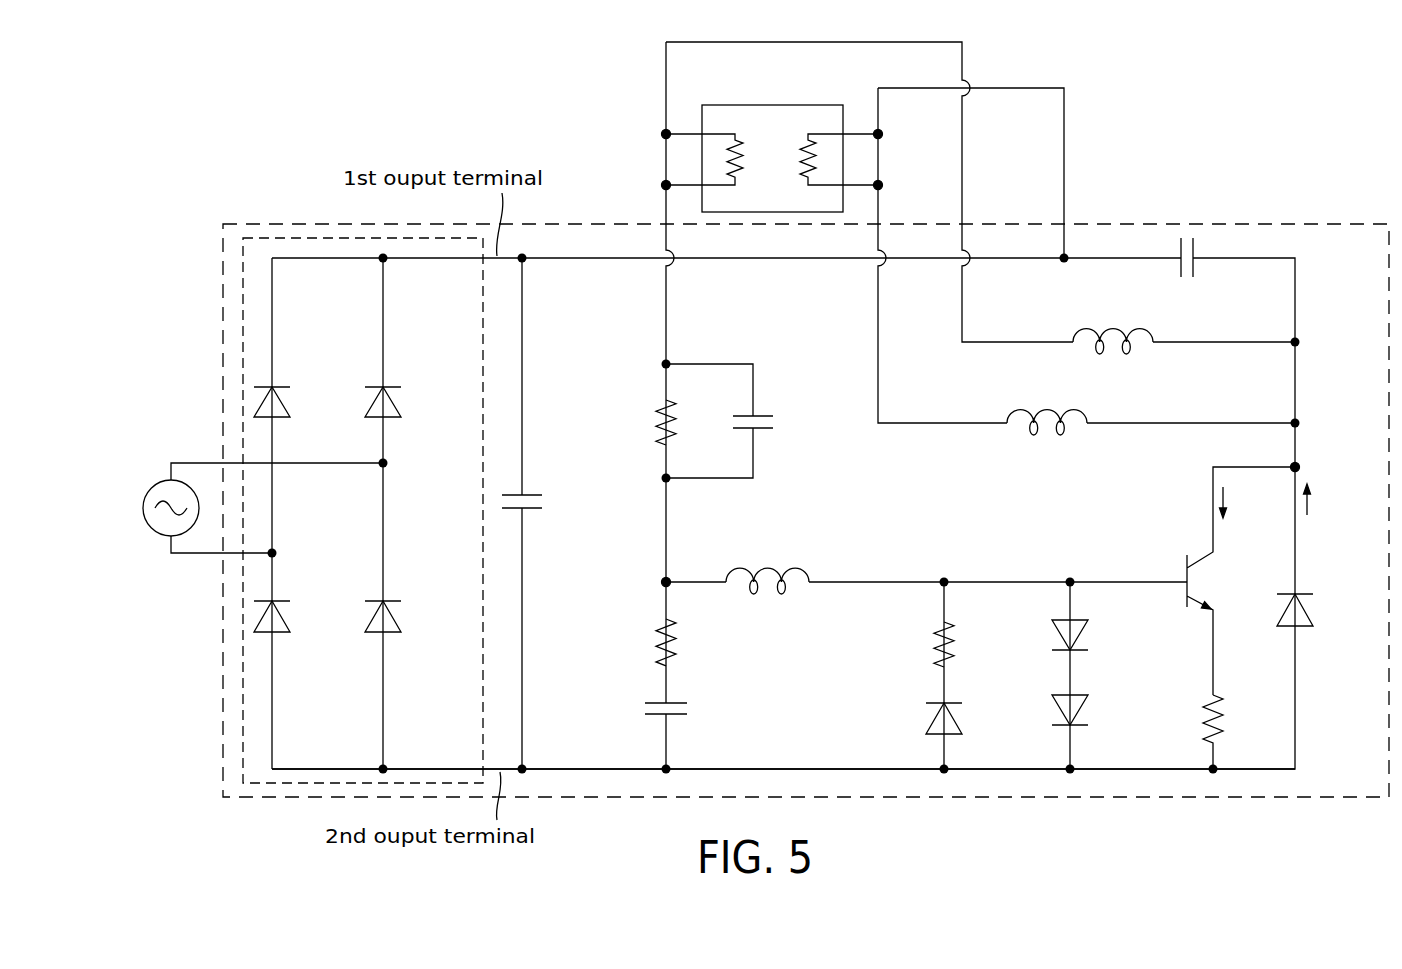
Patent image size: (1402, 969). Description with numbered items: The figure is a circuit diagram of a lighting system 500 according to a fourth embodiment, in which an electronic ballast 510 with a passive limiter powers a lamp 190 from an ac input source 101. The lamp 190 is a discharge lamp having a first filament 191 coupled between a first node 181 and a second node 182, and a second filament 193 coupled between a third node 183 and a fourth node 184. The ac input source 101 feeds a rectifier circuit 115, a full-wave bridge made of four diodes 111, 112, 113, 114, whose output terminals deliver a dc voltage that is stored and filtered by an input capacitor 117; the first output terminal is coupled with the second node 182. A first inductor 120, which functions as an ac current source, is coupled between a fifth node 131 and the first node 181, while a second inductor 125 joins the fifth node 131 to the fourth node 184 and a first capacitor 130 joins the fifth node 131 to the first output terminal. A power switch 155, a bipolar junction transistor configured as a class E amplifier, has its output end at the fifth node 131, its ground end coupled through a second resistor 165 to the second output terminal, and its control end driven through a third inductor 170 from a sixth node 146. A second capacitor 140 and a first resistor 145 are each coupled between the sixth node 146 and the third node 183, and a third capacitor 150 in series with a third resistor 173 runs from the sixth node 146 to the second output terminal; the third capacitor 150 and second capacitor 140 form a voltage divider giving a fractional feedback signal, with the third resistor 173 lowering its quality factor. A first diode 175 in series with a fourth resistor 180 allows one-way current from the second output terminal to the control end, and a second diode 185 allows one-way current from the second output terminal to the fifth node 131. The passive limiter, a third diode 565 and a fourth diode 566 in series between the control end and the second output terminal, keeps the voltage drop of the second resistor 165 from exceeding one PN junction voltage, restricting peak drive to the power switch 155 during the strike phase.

The ac input source 101 is at (158, 490).
The diode 111 is at (291, 397).
The diode 112 is at (402, 397).
The diode 113 is at (291, 611).
The diode 114 is at (402, 611).
The rectifier circuit 115 is at (243, 770).
The input capacitor 117 is at (544, 502).
The first inductor 120 is at (1050, 412).
The second inductor 125 is at (1115, 332).
The first capacitor 130 is at (1190, 280).
The fifth node 131 is at (1300, 465).
The second capacitor 140 is at (778, 424).
The first resistor 145 is at (654, 420).
The sixth node 146 is at (662, 578).
The third capacitor 150 is at (690, 708).
The power switch 155 is at (1192, 560).
The second resistor 165 is at (1200, 718).
The third inductor 170 is at (768, 566).
The third resistor 173 is at (654, 642).
The first diode 175 is at (932, 720).
The fourth resistor 180 is at (932, 643).
The first node 181 is at (884, 185).
The second node 182 is at (884, 134).
The third node 183 is at (660, 185).
The fourth node 184 is at (660, 134).
The second diode 185 is at (1315, 606).
The lamp 190 is at (793, 104).
The first filament 191 is at (799, 166).
The second filament 193 is at (743, 156).
The lighting system 500 is at (1232, 112).
The electronic ballast 510 is at (295, 224).
The third diode 565 is at (1058, 624).
The fourth diode 566 is at (1058, 700).